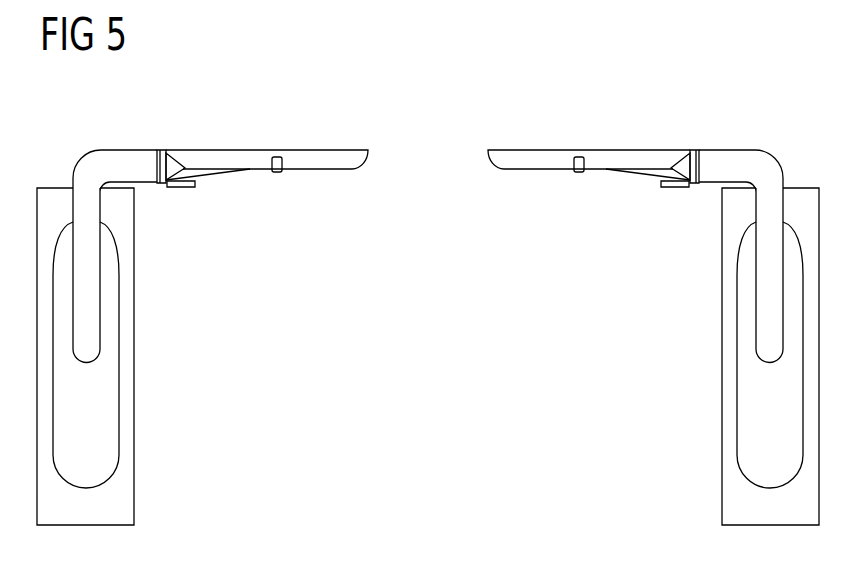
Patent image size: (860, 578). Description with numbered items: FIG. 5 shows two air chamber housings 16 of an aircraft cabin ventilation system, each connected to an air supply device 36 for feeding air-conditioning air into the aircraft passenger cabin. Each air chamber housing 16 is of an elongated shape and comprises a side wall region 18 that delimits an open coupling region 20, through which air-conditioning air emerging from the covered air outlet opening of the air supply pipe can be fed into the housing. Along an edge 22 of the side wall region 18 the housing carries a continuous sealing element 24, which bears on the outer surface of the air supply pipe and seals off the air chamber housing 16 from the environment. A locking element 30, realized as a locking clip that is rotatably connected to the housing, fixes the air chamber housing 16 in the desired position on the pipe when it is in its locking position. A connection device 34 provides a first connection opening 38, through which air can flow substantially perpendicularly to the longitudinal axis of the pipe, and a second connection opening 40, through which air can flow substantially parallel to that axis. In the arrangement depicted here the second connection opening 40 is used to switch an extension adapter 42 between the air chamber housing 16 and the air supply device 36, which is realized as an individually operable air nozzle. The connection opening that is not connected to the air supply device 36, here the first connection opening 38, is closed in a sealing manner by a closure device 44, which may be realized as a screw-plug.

The air chamber housing 16 is at (258, 87).
The side wall region 18 is at (336, 199).
The open coupling region 20 is at (313, 97).
The edge 22 is at (393, 178).
The sealing element 24 is at (372, 113).
The locking element 30 is at (290, 199).
The connection device 34 is at (247, 193).
The air supply device 36 is at (136, 410).
The first connection opening 38 is at (205, 218).
The second connection opening 40 is at (150, 121).
The extension adapter 42 is at (74, 133).
The closure device 44 is at (165, 218).